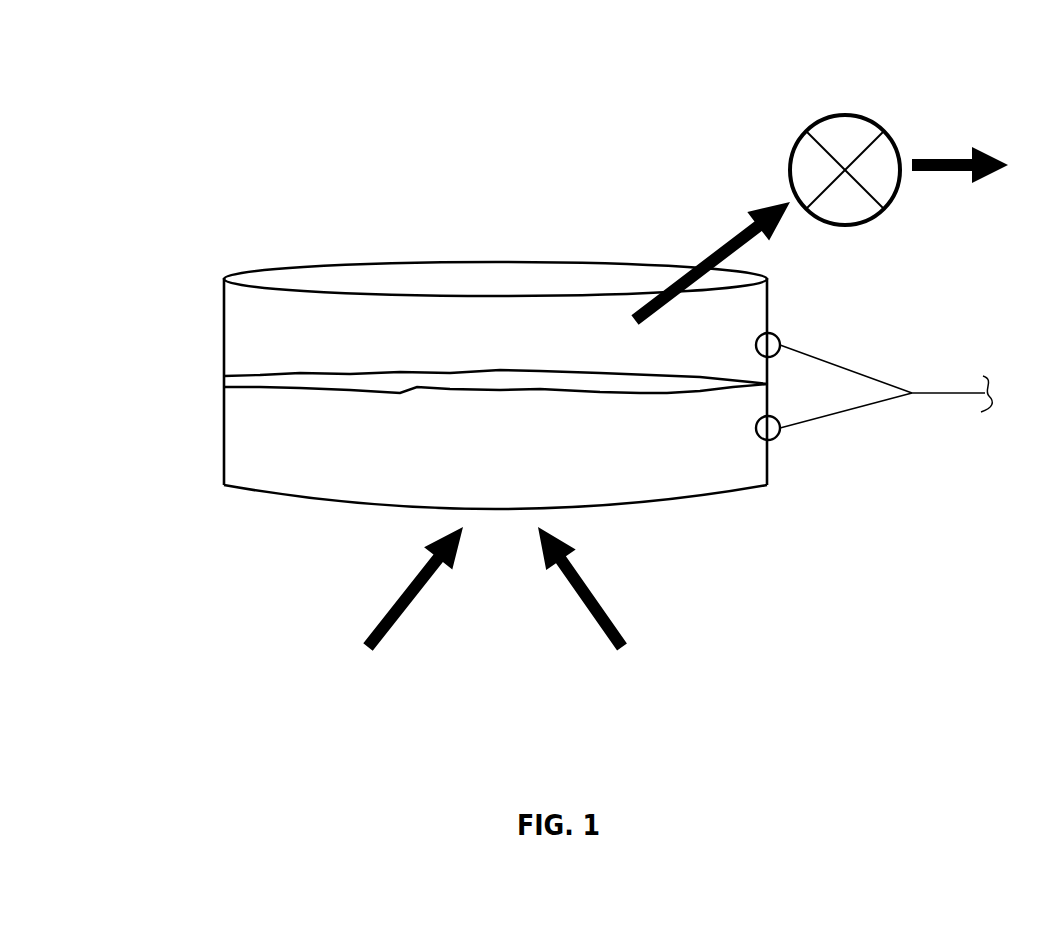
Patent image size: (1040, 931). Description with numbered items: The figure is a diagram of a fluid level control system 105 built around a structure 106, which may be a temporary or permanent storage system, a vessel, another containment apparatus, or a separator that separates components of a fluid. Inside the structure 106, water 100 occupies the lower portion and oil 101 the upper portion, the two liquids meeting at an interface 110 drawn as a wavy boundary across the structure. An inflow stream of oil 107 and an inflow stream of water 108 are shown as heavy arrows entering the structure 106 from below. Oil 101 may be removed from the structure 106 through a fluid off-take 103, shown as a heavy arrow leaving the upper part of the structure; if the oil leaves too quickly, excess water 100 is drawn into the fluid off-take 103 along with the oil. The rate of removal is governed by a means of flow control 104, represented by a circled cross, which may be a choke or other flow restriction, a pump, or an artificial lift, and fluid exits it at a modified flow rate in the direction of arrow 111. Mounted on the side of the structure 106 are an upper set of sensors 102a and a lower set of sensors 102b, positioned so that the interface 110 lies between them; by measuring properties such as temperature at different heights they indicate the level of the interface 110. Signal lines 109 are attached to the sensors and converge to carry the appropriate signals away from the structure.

The water 100 is at (305, 451).
The oil 101 is at (307, 355).
The upper set of sensors 102a is at (780, 347).
The lower set of sensors 102b is at (780, 432).
The fluid off-take 103 is at (717, 245).
The means of flow control 104 is at (827, 128).
The fluid level control system 105 is at (195, 159).
The structure 106 is at (380, 265).
The inflow stream of oil 107 is at (382, 622).
The inflow stream of water 108 is at (612, 620).
The signal lines 109 is at (877, 377).
The interface 110 is at (288, 382).
The arrow 111 is at (947, 157).